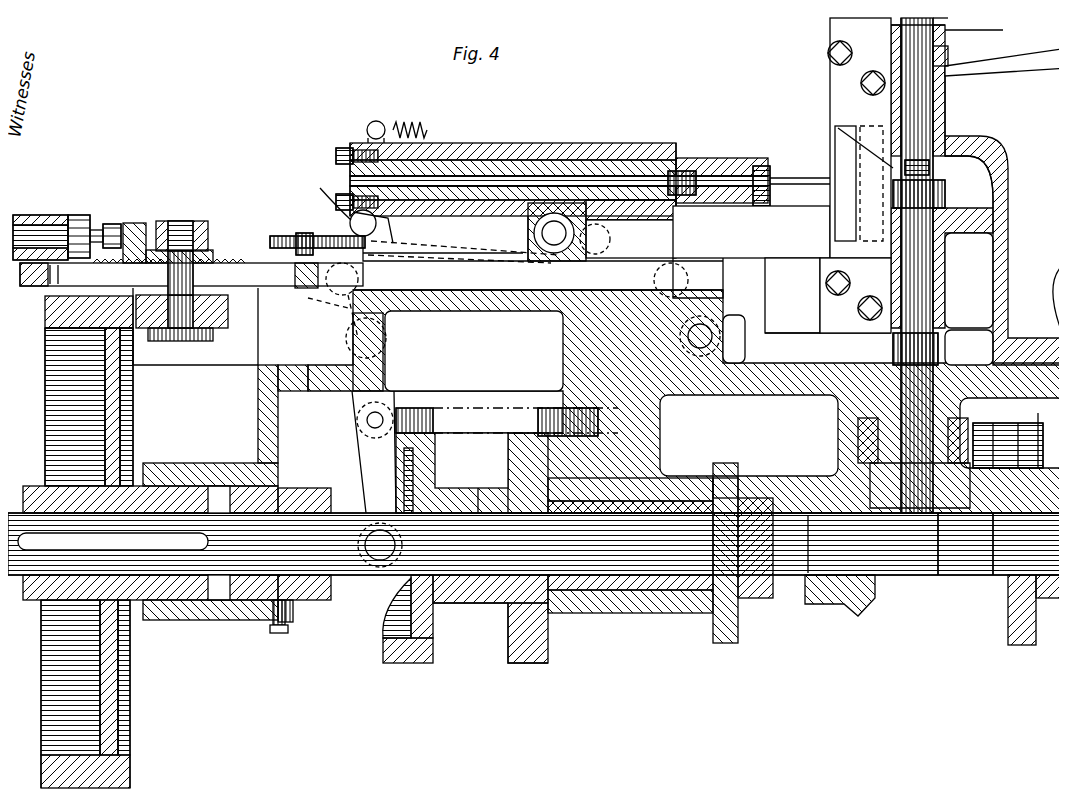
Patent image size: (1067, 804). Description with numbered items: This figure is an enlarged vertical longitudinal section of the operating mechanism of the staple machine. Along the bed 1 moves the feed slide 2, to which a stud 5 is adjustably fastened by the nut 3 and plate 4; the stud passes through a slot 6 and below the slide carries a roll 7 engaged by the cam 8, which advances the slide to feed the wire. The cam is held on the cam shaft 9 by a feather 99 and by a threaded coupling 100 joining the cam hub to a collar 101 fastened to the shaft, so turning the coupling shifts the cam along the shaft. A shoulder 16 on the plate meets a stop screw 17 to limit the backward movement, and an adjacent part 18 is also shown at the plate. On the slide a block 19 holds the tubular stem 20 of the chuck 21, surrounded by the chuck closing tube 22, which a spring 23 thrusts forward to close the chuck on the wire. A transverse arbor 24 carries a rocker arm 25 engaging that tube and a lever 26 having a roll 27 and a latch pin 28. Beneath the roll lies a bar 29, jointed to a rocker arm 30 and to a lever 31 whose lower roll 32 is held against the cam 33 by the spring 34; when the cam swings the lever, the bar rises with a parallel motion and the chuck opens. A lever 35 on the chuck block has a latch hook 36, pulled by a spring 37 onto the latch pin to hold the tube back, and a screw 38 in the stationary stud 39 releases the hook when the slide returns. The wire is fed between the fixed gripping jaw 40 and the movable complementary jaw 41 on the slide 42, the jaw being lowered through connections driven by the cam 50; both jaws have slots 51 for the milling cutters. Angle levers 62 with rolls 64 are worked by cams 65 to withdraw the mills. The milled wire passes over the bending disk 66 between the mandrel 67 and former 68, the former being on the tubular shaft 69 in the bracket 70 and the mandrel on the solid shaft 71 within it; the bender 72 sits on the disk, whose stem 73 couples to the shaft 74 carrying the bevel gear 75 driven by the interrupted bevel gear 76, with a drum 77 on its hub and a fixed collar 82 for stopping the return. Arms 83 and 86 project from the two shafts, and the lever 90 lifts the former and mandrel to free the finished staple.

The bed 1 is at (668, 401).
The feed slide 2 is at (400, 300).
The nut 3 is at (190, 215).
The plate 4 is at (205, 248).
The stud 5 is at (150, 266).
The slot 6 is at (265, 280).
The roll 7 is at (220, 315).
The cam 8 is at (125, 380).
The cam shaft 9 is at (330, 595).
The shoulder 16 is at (130, 215).
The stop screw 17 is at (92, 216).
The adjusting screw 18 is at (38, 207).
The block 19 is at (530, 140).
The tubular stem 20 is at (620, 140).
The chuck 21 is at (760, 160).
The chuck closing tube 22 is at (712, 148).
The spring 23 is at (420, 135).
The arbor 24 is at (542, 247).
The rocker arm 25 is at (515, 222).
The lever 26 is at (450, 250).
The roll 27 is at (602, 232).
The latch pin 28 is at (329, 193).
The bar 29 is at (535, 300).
The rocker arm 30 is at (700, 275).
The lever 31 is at (325, 310).
The roll 32 is at (340, 485).
The cam 33 is at (370, 630).
The spring 34 is at (430, 410).
The lever 35 is at (358, 118).
The latch hook 36 is at (390, 218).
The spring 37 is at (405, 118).
The screw 38 is at (290, 225).
The stud 39 is at (272, 228).
The gripping jaw 40 is at (822, 206).
The complementary jaw 41 is at (820, 170).
The slide 42 is at (820, 18).
The cam 50 is at (515, 655).
The slots 51 is at (845, 118).
The angle levers 62 is at (985, 567).
The rolls 64 is at (1012, 420).
The cams 65 is at (722, 635).
The bending disk 66 is at (938, 186).
The mandrel 67 is at (925, 160).
The former 68 is at (830, 120).
The tubular shaft 69 is at (945, 99).
The bracket 70 is at (984, 163).
The solid shaft 71 is at (945, 12).
The bender 72 is at (1000, 166).
The stem 73 is at (928, 262).
The shaft 74 is at (885, 340).
The bevel gear 75 is at (932, 567).
The interrupted bevel gear 76 is at (858, 596).
The drum 77 is at (812, 455).
The fixed collar 82 is at (830, 410).
The arm 83 is at (985, 29).
The arm 86 is at (940, 40).
The lever 90 is at (1002, 62).
The feather 99 is at (533, 544).
The threaded coupling 100 is at (205, 612).
The collar 101 is at (284, 620).